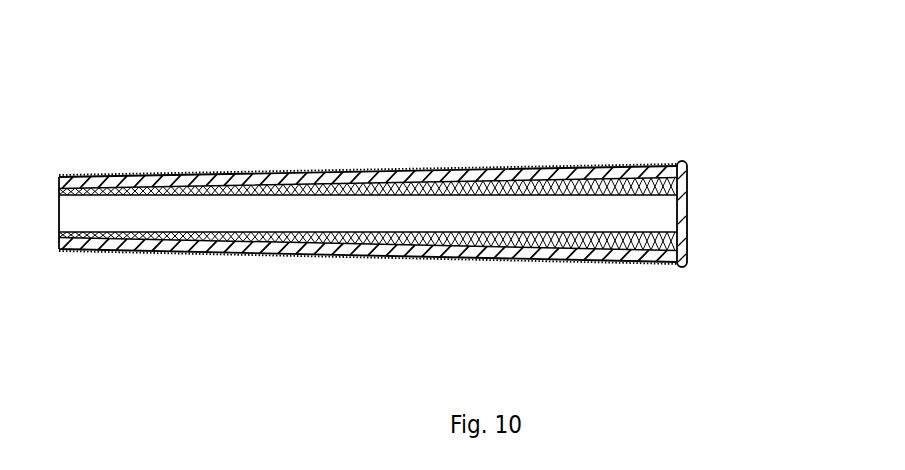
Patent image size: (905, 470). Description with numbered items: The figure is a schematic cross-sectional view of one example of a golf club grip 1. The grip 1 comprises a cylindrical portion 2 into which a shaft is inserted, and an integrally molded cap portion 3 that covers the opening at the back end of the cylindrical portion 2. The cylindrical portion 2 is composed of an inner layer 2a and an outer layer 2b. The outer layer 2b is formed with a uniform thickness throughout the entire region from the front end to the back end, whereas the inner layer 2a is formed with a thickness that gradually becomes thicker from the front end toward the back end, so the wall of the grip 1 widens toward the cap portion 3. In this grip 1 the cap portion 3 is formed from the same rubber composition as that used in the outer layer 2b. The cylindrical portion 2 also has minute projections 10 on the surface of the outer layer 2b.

The grip 1 is at (358, 155).
The minute projections 10 is at (487, 167).
The cylindrical portion 2 is at (622, 78).
The inner layer 2a is at (561, 180).
The outer layer 2b is at (604, 166).
The cap portion 3 is at (682, 220).